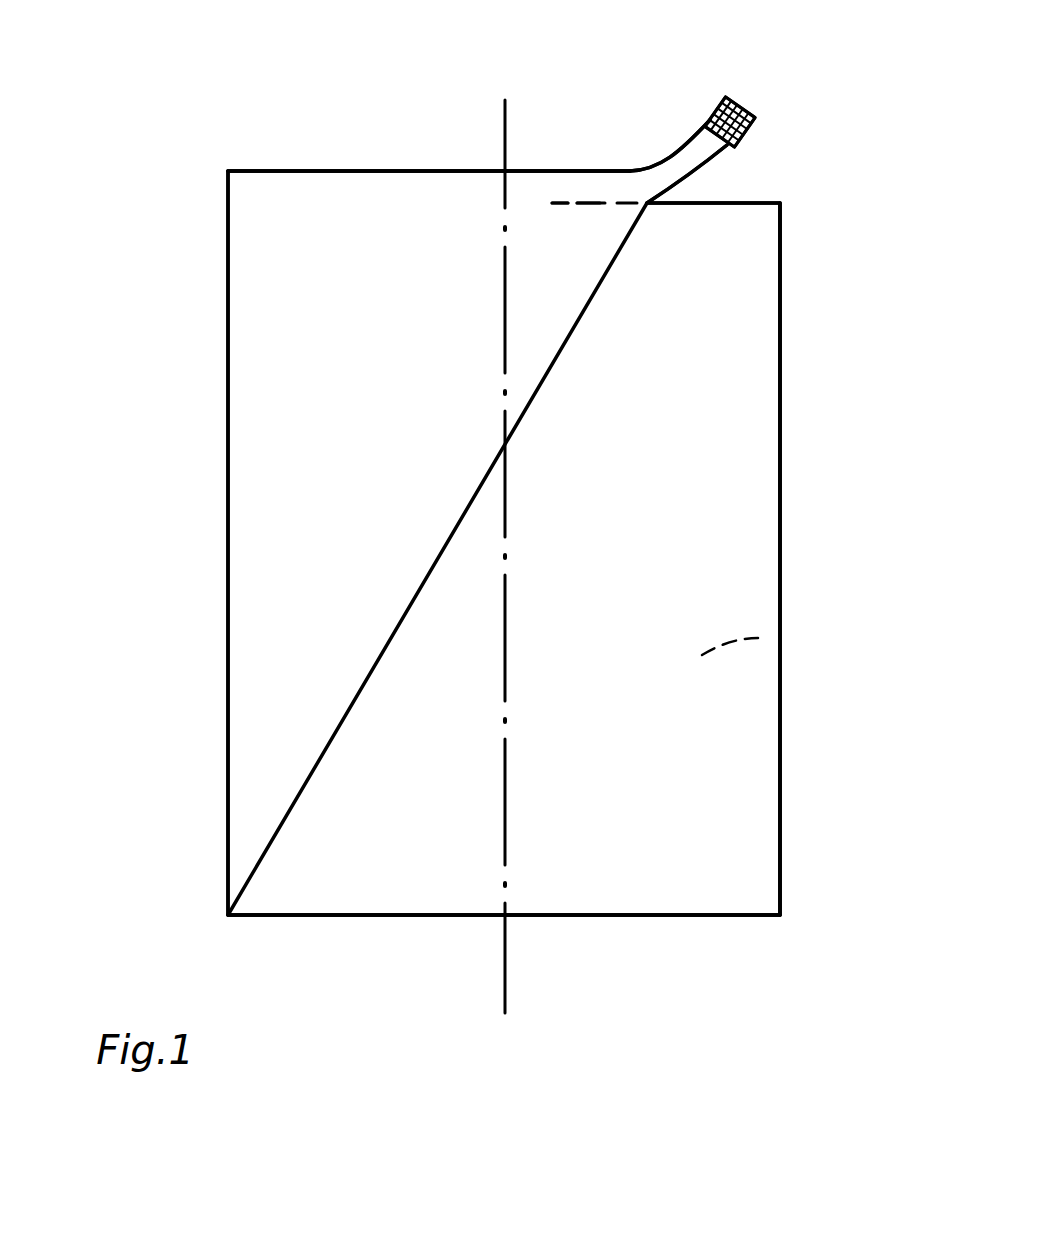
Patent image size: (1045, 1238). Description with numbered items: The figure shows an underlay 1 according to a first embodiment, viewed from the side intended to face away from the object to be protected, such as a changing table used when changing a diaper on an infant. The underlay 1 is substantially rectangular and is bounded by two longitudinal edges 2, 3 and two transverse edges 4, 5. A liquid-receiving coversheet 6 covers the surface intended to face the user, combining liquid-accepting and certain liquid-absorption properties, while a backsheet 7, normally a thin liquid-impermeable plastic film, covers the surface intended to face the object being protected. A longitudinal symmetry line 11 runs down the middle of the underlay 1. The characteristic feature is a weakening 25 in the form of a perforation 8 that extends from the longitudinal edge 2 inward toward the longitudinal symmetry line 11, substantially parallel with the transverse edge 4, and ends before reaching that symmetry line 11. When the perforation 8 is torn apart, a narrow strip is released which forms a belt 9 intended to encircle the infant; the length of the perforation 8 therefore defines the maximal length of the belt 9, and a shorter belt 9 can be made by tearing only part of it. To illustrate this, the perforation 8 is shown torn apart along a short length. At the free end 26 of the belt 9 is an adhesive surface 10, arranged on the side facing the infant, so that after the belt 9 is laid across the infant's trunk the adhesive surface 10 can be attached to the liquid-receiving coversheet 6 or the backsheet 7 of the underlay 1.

The underlay 1 is at (128, 134).
The longitudinal edge 2 is at (780, 352).
The longitudinal edge 3 is at (227, 448).
The transverse edge 4 is at (462, 171).
The transverse edge 5 is at (380, 915).
The liquid-receiving coversheet 6 is at (692, 525).
The backsheet 7 is at (767, 640).
The perforation 8 is at (600, 203).
The belt 9 is at (687, 158).
The adhesive surface 10 is at (708, 112).
The longitudinal symmetry line 11 is at (506, 965).
The weakening 25 is at (540, 186).
The free end 26 is at (748, 103).